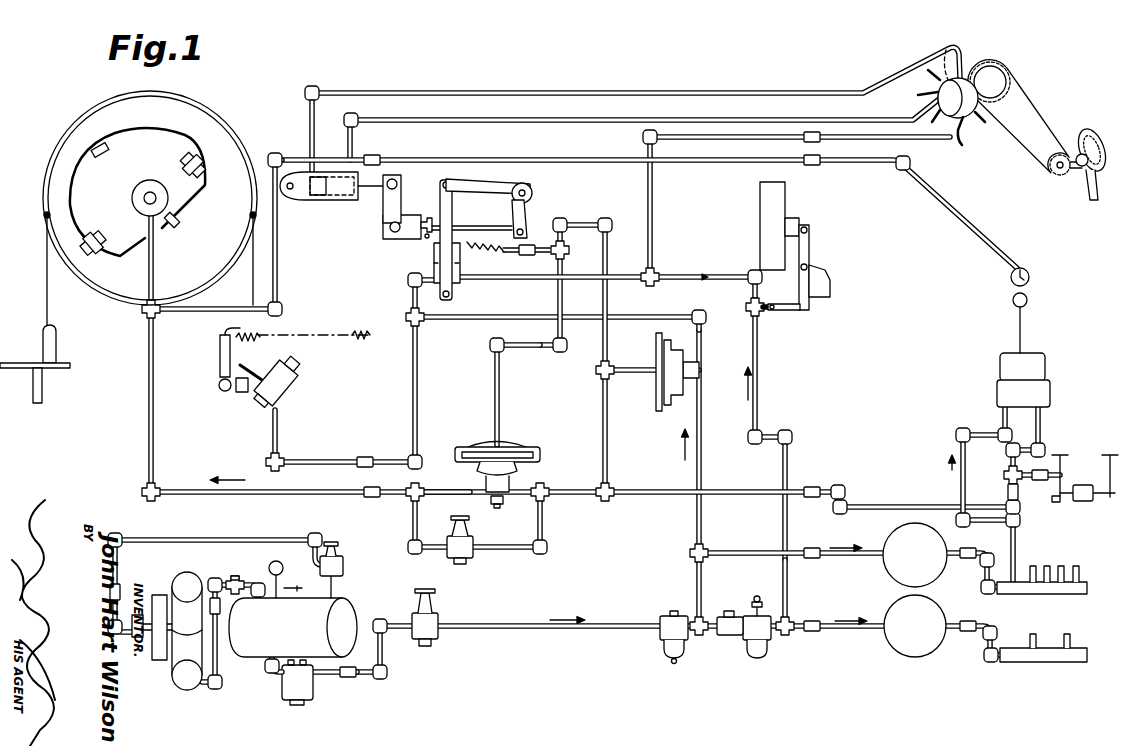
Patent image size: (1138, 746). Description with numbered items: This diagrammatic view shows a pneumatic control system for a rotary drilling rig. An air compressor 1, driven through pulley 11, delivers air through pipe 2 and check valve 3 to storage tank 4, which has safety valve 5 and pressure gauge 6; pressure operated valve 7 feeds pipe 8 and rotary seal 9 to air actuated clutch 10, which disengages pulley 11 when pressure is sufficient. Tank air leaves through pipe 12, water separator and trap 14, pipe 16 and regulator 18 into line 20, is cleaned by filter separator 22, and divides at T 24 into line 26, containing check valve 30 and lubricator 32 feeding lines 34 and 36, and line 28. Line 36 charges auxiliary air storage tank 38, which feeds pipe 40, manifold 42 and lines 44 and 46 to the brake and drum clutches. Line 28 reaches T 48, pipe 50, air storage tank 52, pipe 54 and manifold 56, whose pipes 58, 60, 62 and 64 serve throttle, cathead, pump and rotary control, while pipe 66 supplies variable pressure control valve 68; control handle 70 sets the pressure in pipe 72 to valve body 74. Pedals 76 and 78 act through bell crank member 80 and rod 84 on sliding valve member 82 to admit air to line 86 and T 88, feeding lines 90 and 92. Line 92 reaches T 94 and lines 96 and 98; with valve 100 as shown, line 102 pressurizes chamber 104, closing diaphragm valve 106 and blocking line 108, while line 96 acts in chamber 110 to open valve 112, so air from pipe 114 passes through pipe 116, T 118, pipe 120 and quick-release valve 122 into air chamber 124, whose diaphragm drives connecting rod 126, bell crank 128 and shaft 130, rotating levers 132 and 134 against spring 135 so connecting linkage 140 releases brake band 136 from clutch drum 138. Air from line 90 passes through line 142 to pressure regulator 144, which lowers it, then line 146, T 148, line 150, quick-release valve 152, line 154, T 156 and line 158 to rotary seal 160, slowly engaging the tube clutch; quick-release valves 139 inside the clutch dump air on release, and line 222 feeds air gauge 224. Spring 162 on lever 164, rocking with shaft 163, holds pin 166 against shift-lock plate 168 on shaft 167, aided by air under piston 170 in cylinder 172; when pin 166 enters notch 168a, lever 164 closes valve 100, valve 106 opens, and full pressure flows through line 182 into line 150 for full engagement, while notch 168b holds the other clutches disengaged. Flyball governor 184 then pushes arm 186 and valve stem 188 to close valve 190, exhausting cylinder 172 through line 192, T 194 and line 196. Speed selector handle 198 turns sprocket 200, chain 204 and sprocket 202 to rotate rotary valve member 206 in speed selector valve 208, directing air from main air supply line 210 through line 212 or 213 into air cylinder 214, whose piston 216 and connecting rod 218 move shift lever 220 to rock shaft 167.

The air compressor 1 is at (180, 575).
The pipe 2 is at (219, 650).
The check valve 3 is at (238, 581).
The storage tank 4 is at (358, 612).
The safety valve 5 is at (291, 588).
The pressure gauge 6 is at (278, 566).
The pressure operated valve 7 is at (345, 566).
The pipe 8 is at (216, 575).
The rotary seal 9 is at (121, 620).
The air actuated clutch 10 is at (148, 640).
The pulley 11 is at (157, 593).
The pipe 12 is at (270, 680).
The water separator and trap 14 is at (300, 698).
The pipe 16 is at (377, 677).
The regulator 18 is at (438, 622).
The line 20 is at (543, 628).
The filter separator 22 is at (662, 642).
The T 24 is at (699, 634).
The line 26 is at (722, 617).
The line 28 is at (697, 578).
The check valve 30 is at (733, 636).
The lubricator 32 is at (772, 650).
The line 34 is at (790, 590).
The line 36 is at (842, 629).
The auxiliary air storage tank 38 is at (912, 653).
The pipe 40 is at (982, 642).
The manifold 42 is at (1030, 658).
The line 44 is at (1030, 645).
The line 46 is at (1068, 645).
The T 48 is at (690, 553).
The pipe 50 is at (738, 553).
The air storage tank 52 is at (888, 540).
The pipe 54 is at (968, 558).
The manifold 56 is at (1052, 592).
The pipe 58 is at (1033, 566).
The pipe 60 is at (1048, 566).
The pipe 62 is at (1065, 566).
The pipe 64 is at (1080, 572).
The pipe 66 is at (1010, 545).
The variable pressure control valve 68 is at (996, 388).
The control handle 70 is at (1013, 303).
The pipe 72 is at (1044, 426).
The valve body 74 is at (1003, 476).
The pedal 76 is at (1076, 450).
The foot pedal 78 is at (1112, 458).
The bell crank member 80 is at (1092, 486).
The sliding valve member 82 is at (1018, 492).
The rod 84 is at (1055, 494).
The line 86 is at (952, 500).
The T 88 is at (611, 497).
The line 90 is at (567, 495).
The line 92 is at (610, 464).
The T 94 is at (600, 374).
The line 96 is at (620, 372).
The line 98 is at (609, 342).
The valve 100 is at (570, 252).
The line 102 is at (525, 345).
The chamber 104 is at (514, 450).
The diaphragm valve 106 is at (503, 500).
The line 108 is at (530, 488).
The chamber 110 is at (657, 395).
The valve 112 is at (697, 380).
The pipe 114 is at (703, 465).
The pipe 116 is at (630, 320).
The T 118 is at (425, 320).
The pipe 120 is at (420, 385).
The quick-release valve 122 is at (266, 462).
The air chamber 124 is at (296, 380).
The connecting rod 126 is at (257, 340).
The bell crank 128 is at (238, 368).
The shaft 130 is at (218, 388).
The lever 132 is at (220, 350).
The lever 134 is at (237, 388).
The spring 135 is at (362, 332).
The brake band 136 is at (216, 98).
The clutch drum 138 is at (222, 124).
The quick-release valves 139 is at (207, 166).
The connecting linkage 140 is at (250, 302).
The line 142 is at (506, 552).
The pressure regulator 144 is at (468, 560).
The line 146 is at (412, 522).
The T 148 is at (440, 488).
The line 150 is at (297, 497).
The quick-release valve 152 is at (141, 493).
The line 154 is at (146, 413).
The T 156 is at (146, 320).
The line 158 is at (146, 303).
The rotary seal 160 is at (155, 182).
The spring 162 is at (487, 247).
The shaft 163 is at (532, 188).
The lever 164 is at (528, 215).
The pin 166 is at (475, 220).
The shaft 167 is at (390, 226).
The shift-lock plate 168 is at (388, 237).
The notch 168a is at (424, 240).
The notch 168b is at (425, 222).
The piston 170 is at (460, 288).
The cylinder 172 is at (432, 270).
The line 182 is at (450, 488).
The flyball type governor 184 is at (760, 203).
The arm 186 is at (808, 243).
The valve stem 188 is at (778, 306).
The valve 190 is at (747, 312).
The line 192 is at (563, 286).
The T 194 is at (655, 276).
The line 196 is at (706, 287).
The speed selector handle 198 is at (1097, 200).
The sprocket 200 is at (1050, 160).
The sprocket 202 is at (1010, 100).
The chain 204 is at (1040, 116).
The rotary valve member 206 is at (945, 50).
The speed selector valve 208 is at (1002, 66).
The main air supply line 210 is at (655, 180).
The line 212 is at (600, 125).
The line 213 is at (603, 90).
The air cylinder 214 is at (305, 200).
The piston 216 is at (317, 175).
The connecting rod 218 is at (373, 158).
The shift lever 220 is at (384, 208).
The line 222 is at (993, 250).
The air gauge 224 is at (1030, 277).